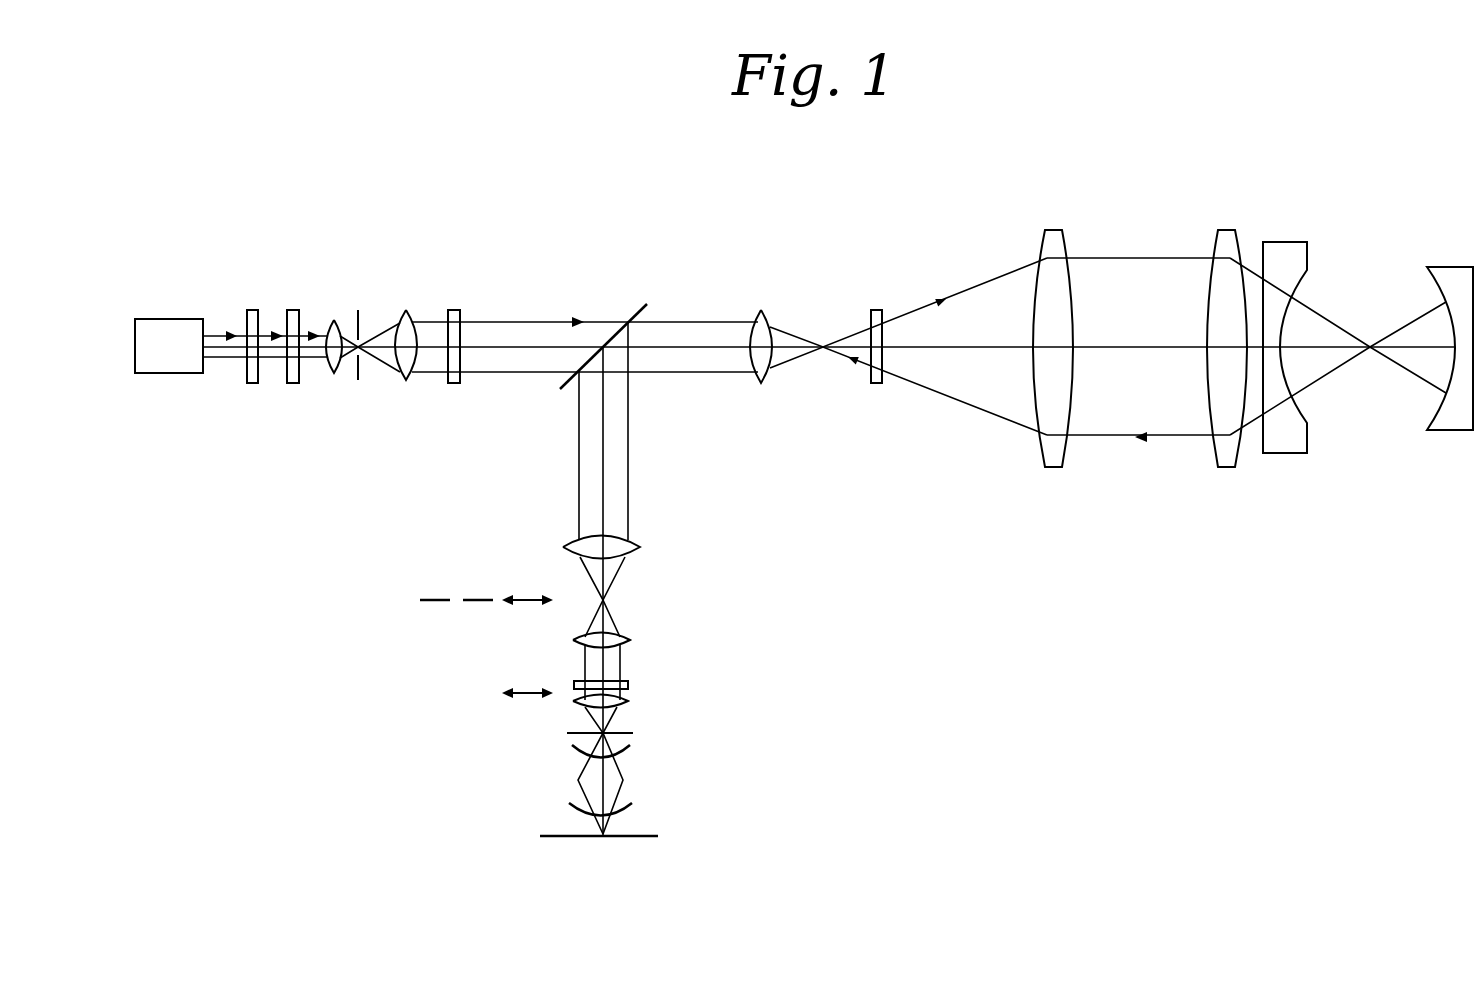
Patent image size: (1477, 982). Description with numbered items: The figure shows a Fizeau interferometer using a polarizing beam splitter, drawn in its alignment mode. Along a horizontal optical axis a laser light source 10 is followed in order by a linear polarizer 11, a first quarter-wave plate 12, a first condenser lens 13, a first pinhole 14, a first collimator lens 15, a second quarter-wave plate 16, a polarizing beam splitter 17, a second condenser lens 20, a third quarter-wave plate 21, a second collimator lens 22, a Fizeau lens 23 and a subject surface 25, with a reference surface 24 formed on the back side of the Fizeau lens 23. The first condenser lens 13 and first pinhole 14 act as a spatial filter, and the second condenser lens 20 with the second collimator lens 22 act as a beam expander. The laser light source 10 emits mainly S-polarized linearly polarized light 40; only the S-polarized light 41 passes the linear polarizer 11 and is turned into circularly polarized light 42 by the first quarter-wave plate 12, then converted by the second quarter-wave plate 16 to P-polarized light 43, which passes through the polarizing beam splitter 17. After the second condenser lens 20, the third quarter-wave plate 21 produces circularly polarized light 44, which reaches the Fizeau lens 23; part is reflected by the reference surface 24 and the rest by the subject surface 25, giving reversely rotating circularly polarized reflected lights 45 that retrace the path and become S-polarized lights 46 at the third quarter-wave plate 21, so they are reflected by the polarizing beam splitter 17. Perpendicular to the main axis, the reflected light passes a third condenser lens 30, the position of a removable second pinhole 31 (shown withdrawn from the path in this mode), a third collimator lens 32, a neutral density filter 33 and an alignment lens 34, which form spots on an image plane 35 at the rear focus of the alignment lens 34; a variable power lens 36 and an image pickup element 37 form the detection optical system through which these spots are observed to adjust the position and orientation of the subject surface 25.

The laser light source 10 is at (170, 373).
The linear polarizer 11 is at (255, 383).
The first quarter-wave plate 12 is at (295, 383).
The first condenser lens 13 is at (336, 373).
The first pinhole 14 is at (358, 380).
The first collimator lens 15 is at (407, 383).
The second quarter-wave plate 16 is at (453, 383).
The polarizing beam splitter 17 is at (638, 310).
The second condenser lens 20 is at (762, 385).
The third quarter-wave plate 21 is at (878, 387).
The second collimator lens 22 is at (1053, 460).
The Fizeau lens 23 is at (1283, 447).
The reference surface 24 is at (1303, 408).
The subject surface 25 is at (1427, 408).
The third condenser lens 30 is at (638, 547).
The second pinhole 31 is at (428, 598).
The third collimator lens 32 is at (632, 640).
The neutral density filter 33 is at (630, 684).
The alignment lens 34 is at (630, 701).
The image plane 35 is at (633, 733).
The variable power lens 36 is at (632, 807).
The image pickup element 37 is at (650, 837).
The linearly polarized light 40 is at (215, 332).
The S-polarized light 41 is at (267, 332).
The circularly polarized light 42 is at (303, 333).
The P-polarized light 43 is at (528, 320).
The circularly polarized light 44 is at (917, 308).
The circularly polarized reflected lights 45 is at (1165, 438).
The S-polarized lights 46 is at (856, 362).